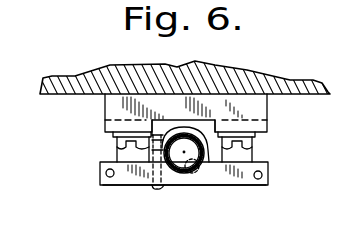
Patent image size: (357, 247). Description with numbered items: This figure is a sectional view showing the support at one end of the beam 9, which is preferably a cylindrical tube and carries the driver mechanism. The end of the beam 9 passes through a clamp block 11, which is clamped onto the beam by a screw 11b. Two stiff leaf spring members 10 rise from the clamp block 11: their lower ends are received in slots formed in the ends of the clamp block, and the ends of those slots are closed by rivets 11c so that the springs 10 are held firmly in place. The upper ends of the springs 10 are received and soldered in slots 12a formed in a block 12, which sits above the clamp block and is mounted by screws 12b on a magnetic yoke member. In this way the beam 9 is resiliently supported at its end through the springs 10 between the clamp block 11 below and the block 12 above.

The beam 9 is at (199, 172).
The leaf spring members 10 is at (247, 157).
The clamp block 11 is at (193, 183).
The screw 11b is at (159, 190).
The rivets 11c is at (266, 178).
The block 12 is at (111, 106).
The slots 12a is at (104, 127).
The screws 12b is at (238, 139).